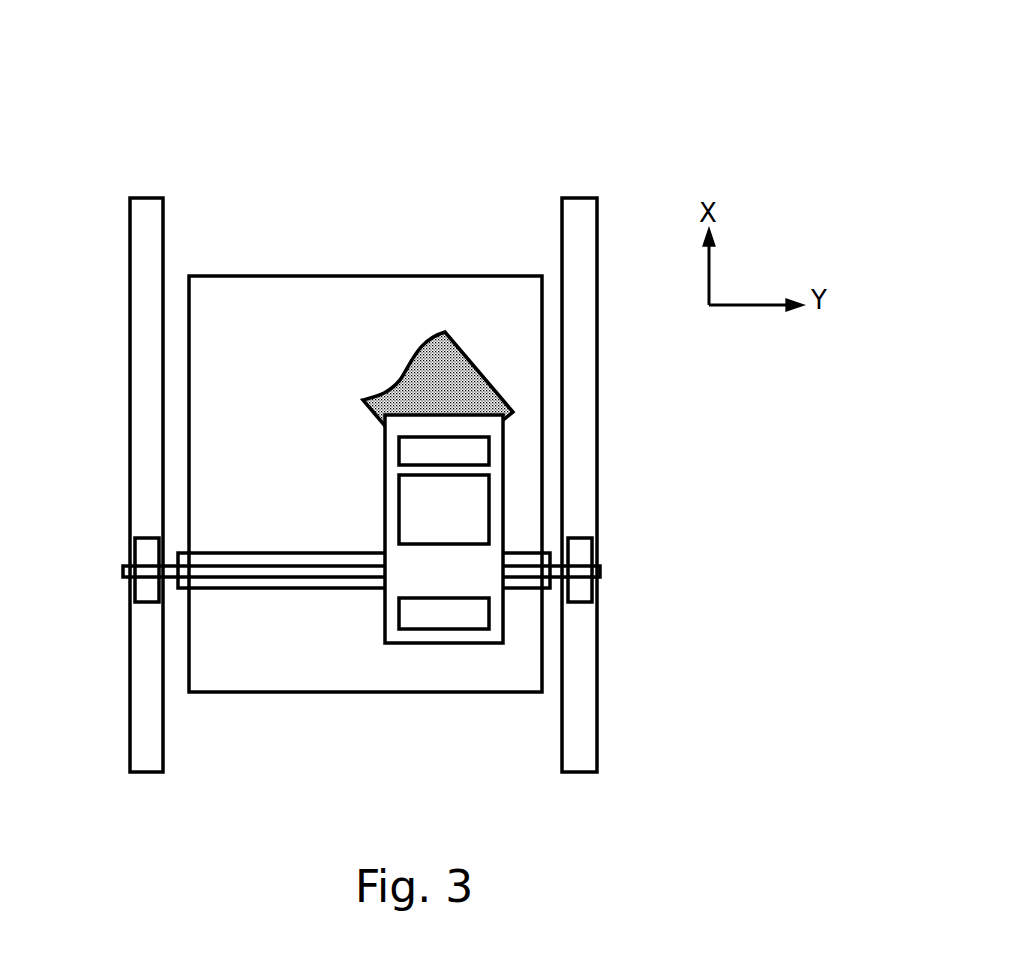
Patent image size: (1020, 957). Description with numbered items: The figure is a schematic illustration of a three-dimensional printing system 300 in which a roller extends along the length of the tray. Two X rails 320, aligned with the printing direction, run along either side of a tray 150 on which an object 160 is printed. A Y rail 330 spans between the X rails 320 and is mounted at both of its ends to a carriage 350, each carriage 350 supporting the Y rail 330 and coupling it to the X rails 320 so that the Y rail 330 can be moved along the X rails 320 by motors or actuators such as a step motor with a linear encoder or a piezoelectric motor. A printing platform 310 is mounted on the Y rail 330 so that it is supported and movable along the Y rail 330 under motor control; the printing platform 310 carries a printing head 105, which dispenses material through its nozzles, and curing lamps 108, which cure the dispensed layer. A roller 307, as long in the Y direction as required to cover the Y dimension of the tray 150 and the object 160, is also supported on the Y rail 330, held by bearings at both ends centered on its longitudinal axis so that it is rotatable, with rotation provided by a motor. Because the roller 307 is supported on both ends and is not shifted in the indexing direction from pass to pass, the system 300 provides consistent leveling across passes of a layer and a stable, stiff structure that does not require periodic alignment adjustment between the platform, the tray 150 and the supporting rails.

The printing system 300 is at (657, 88).
The X rails 320 is at (158, 213).
The tray 150 is at (278, 682).
The object 160 is at (463, 362).
The printing platform 310 is at (505, 428).
The curing lamps 108 is at (473, 450).
The printing head 105 is at (473, 490).
The roller 307 is at (533, 552).
The Y rail 330 is at (593, 572).
The carriage 350 is at (145, 590).